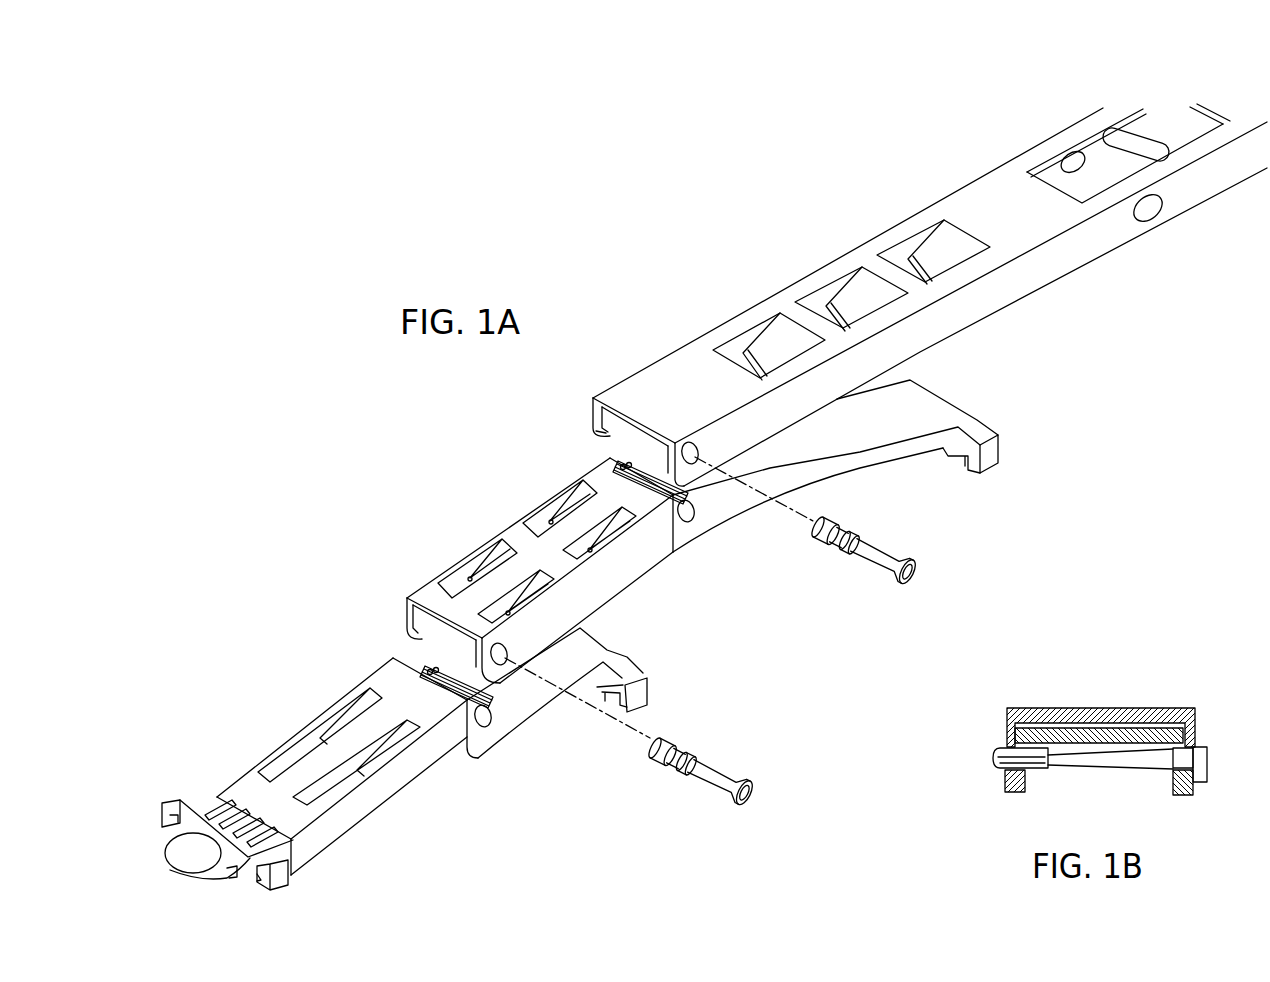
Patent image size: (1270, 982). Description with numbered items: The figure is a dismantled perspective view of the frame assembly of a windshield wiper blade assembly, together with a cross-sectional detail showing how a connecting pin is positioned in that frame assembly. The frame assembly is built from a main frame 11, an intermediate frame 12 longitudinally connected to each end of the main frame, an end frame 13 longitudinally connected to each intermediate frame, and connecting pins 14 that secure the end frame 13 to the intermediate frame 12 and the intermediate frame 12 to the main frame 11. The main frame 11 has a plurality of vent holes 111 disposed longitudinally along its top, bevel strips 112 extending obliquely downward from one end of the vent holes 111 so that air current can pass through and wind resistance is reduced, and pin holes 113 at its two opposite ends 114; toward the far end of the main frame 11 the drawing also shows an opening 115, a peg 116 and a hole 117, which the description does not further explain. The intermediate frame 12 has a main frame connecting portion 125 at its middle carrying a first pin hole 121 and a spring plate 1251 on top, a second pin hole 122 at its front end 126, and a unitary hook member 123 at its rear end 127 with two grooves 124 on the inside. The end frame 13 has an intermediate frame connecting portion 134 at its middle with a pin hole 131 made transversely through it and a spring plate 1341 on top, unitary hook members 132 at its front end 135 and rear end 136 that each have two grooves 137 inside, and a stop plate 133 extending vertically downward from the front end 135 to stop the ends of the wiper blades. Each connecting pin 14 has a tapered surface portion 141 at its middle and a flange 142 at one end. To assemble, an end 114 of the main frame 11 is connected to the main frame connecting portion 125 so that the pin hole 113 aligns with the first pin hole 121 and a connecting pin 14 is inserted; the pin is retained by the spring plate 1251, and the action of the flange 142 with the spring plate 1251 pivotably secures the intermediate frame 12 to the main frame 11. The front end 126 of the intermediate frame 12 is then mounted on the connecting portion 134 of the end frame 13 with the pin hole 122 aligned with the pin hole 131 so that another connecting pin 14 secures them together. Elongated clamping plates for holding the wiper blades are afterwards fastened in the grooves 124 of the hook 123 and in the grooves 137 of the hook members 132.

In FIG. 1A, the main frame 11 is at (988, 197).
In FIG. 1A, the vent holes 111 is at (825, 313).
In FIG. 1A, the bevel strips 112 is at (858, 287).
In FIG. 1A, the pin holes 113 is at (690, 440).
In FIG. 1A, the opposite ends 114 is at (606, 428).
In FIG. 1A, the window opening 115 is at (1225, 133).
In FIG. 1A, the peg 116 is at (1153, 153).
In FIG. 1A, the hole 117 is at (1143, 222).
In FIG. 1A, the intermediate frame 12 is at (515, 532).
In FIG. 1A, the first pin hole 121 is at (692, 522).
In FIG. 1A, the second pin hole 122 is at (497, 643).
In FIG. 1A, the hook member 123 is at (992, 457).
In FIG. 1A, the grooves 124 is at (968, 456).
In FIG. 1A, the main frame connecting portion 125 is at (745, 510).
In FIG. 1A, the spring plate 1251 is at (616, 464).
In FIG. 1A, the front end 126 is at (428, 641).
In FIG. 1A, the rear end 127 is at (958, 408).
In FIG. 1A, the end frame 13 is at (397, 777).
In FIG. 1A, the pin hole 131 is at (491, 724).
In FIG. 1A, the hook members 132 is at (290, 875).
In FIG. 1A, the stop plate 133 is at (230, 875).
In FIG. 1A, the intermediate frame connecting portion 134 is at (486, 750).
In FIG. 1A, the spring plate 1341 is at (432, 667).
In FIG. 1A, the front end 135 is at (192, 852).
In FIG. 1A, the rear end 136 is at (585, 652).
In FIG. 1A, the hook 137 is at (256, 873).
In FIG. 1A, the connecting pin 14 is at (772, 661).
In FIG. 1A, the tapered surface portion 141 is at (870, 552).
In FIG. 1B, the tapered surface portion 141 is at (1068, 766).
In FIG. 1A, the flange 142 is at (830, 523).
In FIG. 1B, the flange 142 is at (998, 748).